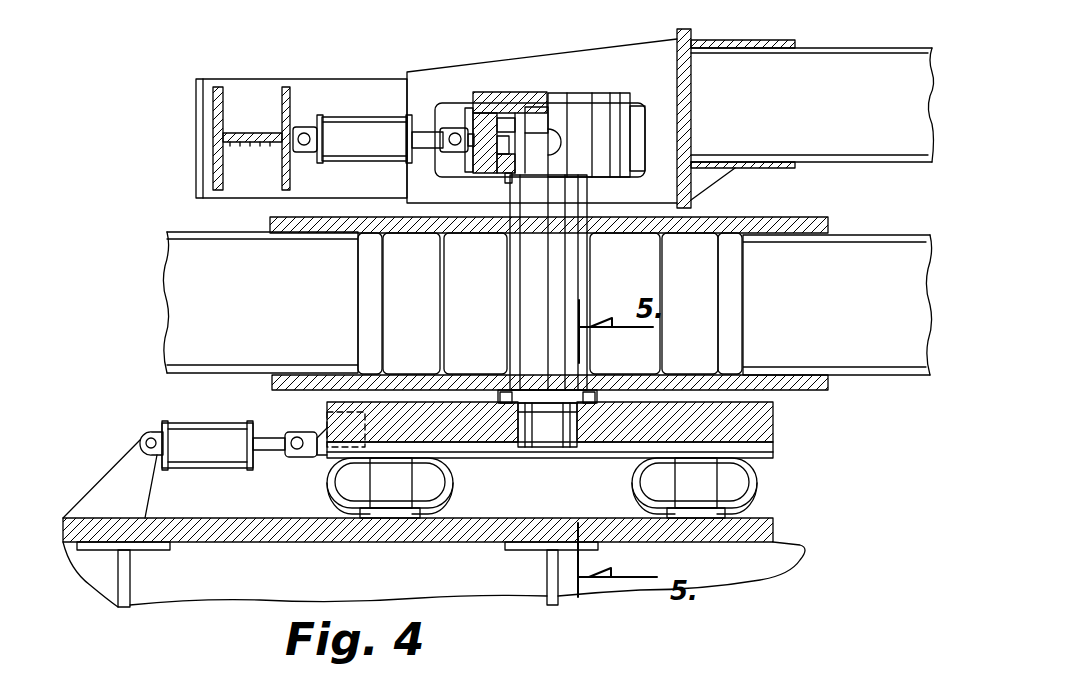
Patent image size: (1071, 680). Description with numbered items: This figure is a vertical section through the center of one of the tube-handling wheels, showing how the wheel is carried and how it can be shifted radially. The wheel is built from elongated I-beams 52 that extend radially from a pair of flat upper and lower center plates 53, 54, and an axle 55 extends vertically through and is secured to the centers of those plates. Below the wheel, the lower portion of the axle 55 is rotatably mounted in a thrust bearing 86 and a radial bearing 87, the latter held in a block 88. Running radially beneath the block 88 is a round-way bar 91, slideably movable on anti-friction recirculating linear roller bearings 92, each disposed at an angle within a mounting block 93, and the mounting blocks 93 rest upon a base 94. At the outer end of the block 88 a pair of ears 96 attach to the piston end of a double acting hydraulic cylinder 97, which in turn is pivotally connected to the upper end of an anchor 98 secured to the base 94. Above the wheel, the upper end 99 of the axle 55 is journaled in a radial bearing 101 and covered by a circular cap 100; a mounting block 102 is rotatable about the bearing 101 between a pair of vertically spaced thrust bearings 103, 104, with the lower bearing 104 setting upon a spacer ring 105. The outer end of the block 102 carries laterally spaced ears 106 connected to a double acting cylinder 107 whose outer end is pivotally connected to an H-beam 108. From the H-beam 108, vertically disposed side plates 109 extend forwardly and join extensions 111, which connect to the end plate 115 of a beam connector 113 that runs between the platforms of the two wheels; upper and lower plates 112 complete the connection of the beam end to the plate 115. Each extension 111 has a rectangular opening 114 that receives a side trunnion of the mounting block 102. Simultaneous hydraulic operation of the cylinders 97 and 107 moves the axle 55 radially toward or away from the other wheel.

The I-beams 52 is at (185, 325).
The upper center plate 53 is at (268, 220).
The lower center plate 54 is at (270, 383).
The axle 55 is at (522, 296).
The thrust bearing 86 is at (492, 393).
The radial bearing 87 is at (536, 442).
The block 88 is at (482, 434).
The bar 91 is at (606, 456).
The bearings 92 is at (330, 486).
The mounting block 93 is at (404, 492).
The base 94 is at (272, 543).
The ears 96 is at (314, 450).
The double acting hydraulic cylinder 97 is at (206, 426).
The anchor 98 is at (116, 480).
The upper end 99 is at (545, 110).
The circular cap 100 is at (530, 94).
The radial bearing 101 is at (552, 142).
The mounting block 102 is at (482, 125).
The thrust bearing 103 is at (505, 120).
The thrust bearing 104 is at (500, 160).
The spacer ring 105 is at (503, 182).
The ears 106 is at (452, 152).
The double acting cylinder 107 is at (362, 120).
The H-beam 108 is at (221, 95).
The side plates 109 is at (258, 90).
The extensions 111 is at (625, 57).
The upper and lower plates 112 is at (767, 5).
The beam connector 113 is at (868, 64).
The rectangular opening 114 is at (438, 104).
The end plate 115 is at (692, 68).